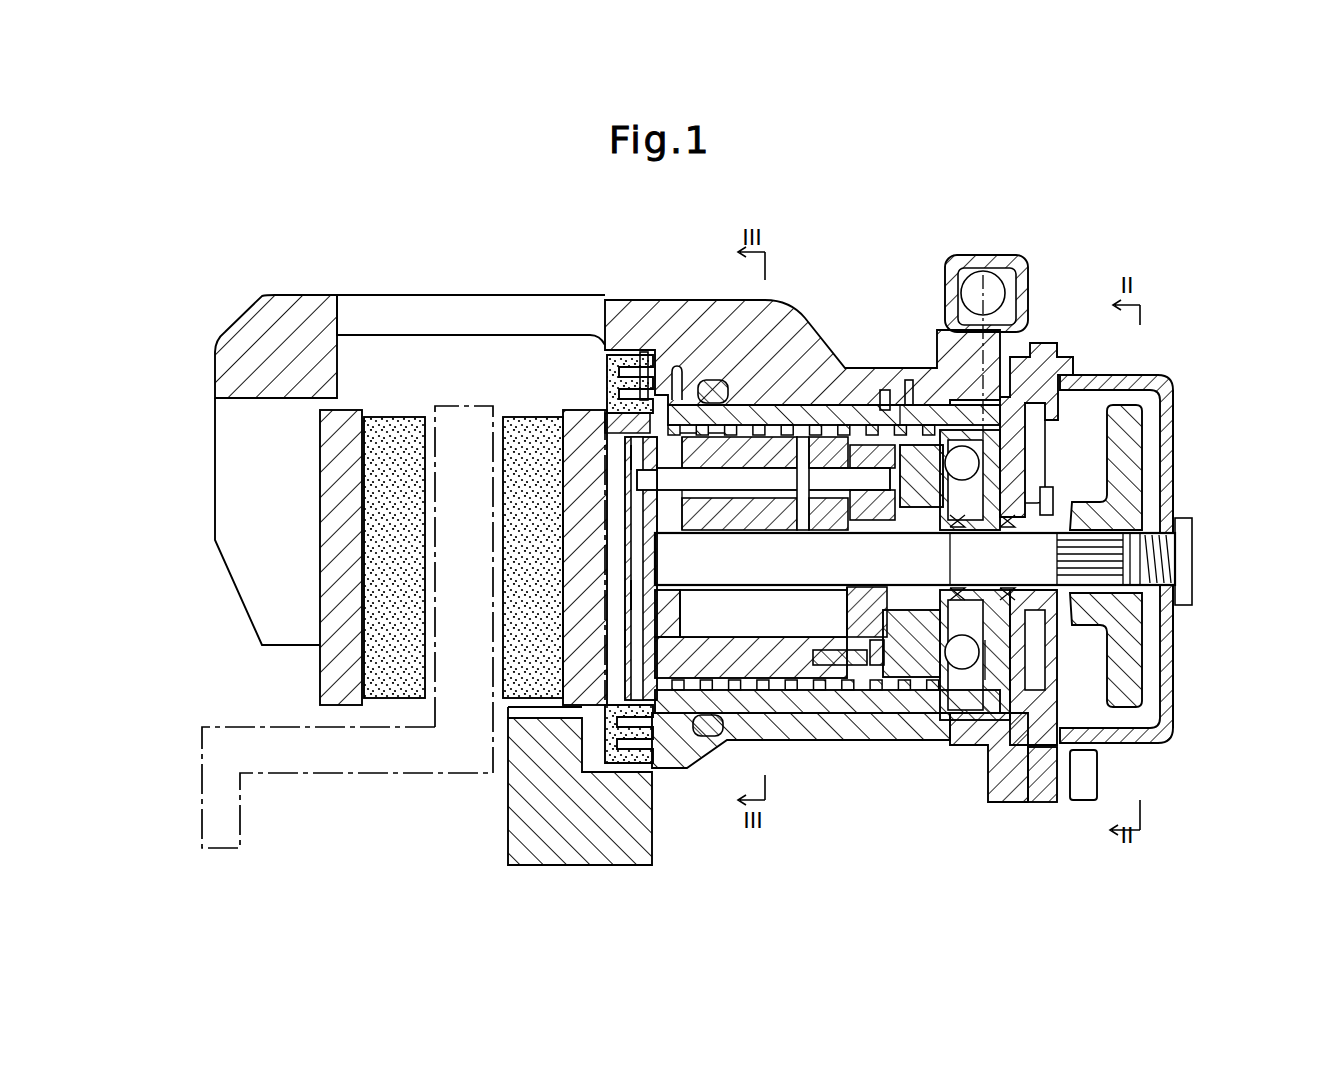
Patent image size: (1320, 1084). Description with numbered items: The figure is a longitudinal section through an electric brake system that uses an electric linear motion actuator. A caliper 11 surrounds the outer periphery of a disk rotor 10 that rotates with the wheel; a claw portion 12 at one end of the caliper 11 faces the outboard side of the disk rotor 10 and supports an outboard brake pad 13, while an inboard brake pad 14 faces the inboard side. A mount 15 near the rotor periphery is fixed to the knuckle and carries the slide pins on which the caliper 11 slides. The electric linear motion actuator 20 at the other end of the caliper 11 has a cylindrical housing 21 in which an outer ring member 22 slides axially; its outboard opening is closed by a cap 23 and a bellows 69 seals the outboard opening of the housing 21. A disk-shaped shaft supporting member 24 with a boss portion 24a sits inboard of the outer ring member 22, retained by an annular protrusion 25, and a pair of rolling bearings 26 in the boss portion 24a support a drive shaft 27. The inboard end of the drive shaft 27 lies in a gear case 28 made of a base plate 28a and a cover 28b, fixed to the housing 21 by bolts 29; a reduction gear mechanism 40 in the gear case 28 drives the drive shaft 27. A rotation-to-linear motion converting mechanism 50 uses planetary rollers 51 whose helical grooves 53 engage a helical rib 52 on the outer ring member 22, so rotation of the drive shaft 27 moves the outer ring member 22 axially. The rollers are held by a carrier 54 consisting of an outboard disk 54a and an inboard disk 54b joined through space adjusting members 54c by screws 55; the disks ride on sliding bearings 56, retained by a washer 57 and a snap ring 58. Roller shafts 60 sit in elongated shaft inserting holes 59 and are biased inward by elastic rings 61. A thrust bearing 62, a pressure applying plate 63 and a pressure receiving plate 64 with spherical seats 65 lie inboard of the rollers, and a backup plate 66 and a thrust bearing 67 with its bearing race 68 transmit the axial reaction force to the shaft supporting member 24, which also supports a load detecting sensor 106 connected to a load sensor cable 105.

The disk rotor 10 is at (462, 415).
The caliper 11 is at (250, 296).
The claw portion 12 is at (235, 488).
The outboard brake pad 13 is at (397, 428).
The inboard brake pad 14 is at (522, 428).
The mount 15 is at (498, 838).
The electric linear motion actuator 20 is at (844, 341).
The housing 21 is at (893, 400).
The outer ring member 22 is at (772, 403).
The cap 23 is at (622, 645).
The shaft supporting member 24 is at (1040, 440).
The boss portion 24a is at (1005, 520).
The annular protrusion 25 is at (1043, 405).
The rolling bearings 26 is at (955, 585).
The drive shaft 27 is at (1022, 573).
The gear case 28 is at (1180, 373).
The base plate 28a is at (1042, 800).
The cover 28b is at (1177, 690).
The bolts 29 is at (1083, 803).
The reduction gear mechanism 40 is at (1158, 446).
The rotation-to-linear motion converting mechanism 50 is at (735, 420).
The planetary rollers 51 is at (712, 515).
The helical rib 52 is at (792, 432).
The helical groove 53 is at (740, 491).
The carrier 54 is at (810, 665).
The outboard disk 54a is at (672, 612).
The inboard disk 54b is at (852, 622).
The space adjusting members 54c is at (772, 705).
The screws 55 is at (838, 668).
The sliding bearings 56 is at (680, 582).
The washer 57 is at (632, 498).
The snap ring 58 is at (680, 590).
The shaft inserting holes 59 is at (675, 366).
The roller shafts 60 is at (708, 378).
The elastic rings 61 is at (645, 352).
The thrust bearing 62 is at (803, 512).
The pressure applying plate 63 is at (828, 505).
The pressure receiving plate 64 is at (915, 507).
The spherical seats 65 is at (873, 515).
The backup plate 66 is at (897, 690).
The thrust bearing 67 is at (962, 700).
The bearing race 68 is at (995, 655).
The bellows 69 is at (615, 355).
The load sensor cable 105 is at (990, 290).
The load detecting sensor 106 is at (1058, 500).